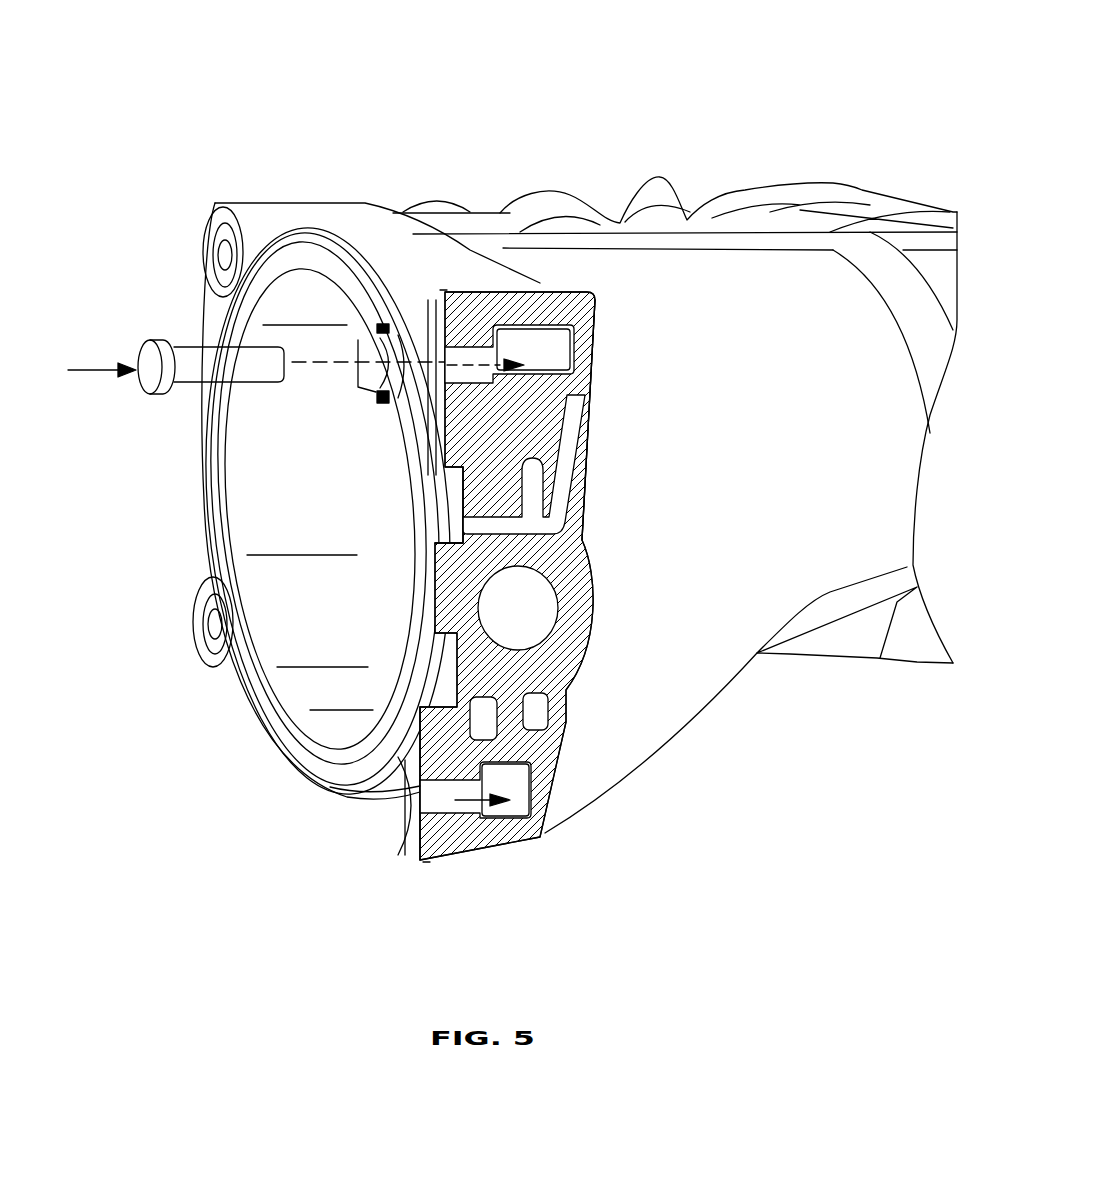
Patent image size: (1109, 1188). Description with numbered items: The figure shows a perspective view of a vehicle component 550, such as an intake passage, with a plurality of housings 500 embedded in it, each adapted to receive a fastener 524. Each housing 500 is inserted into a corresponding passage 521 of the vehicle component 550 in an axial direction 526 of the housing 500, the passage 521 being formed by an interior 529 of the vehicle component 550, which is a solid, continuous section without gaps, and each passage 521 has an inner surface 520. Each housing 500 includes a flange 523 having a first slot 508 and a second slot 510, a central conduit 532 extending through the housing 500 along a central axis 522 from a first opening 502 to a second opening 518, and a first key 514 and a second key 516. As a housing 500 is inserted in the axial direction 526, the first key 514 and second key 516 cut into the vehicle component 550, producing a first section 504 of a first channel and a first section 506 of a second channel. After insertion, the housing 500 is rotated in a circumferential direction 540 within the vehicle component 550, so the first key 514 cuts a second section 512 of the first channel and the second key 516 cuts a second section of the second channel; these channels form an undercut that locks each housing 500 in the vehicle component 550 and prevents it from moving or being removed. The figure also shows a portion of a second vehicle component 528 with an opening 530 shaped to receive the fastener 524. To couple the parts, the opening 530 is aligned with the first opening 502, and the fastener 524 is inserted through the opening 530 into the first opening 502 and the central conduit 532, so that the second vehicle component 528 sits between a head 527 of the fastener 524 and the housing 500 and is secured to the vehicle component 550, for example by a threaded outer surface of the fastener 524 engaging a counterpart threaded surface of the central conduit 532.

The housing 500 is at (213, 212).
The first opening 502 is at (235, 212).
The first section of first channel 504 is at (203, 250).
The first section of second channel 506 is at (243, 240).
The first slot 508 is at (222, 203).
The second slot 510 is at (218, 297).
The second section of first channel 512 is at (515, 284).
The first key 514 is at (490, 293).
The second key 516 is at (560, 428).
The second opening 518 is at (533, 352).
The inner surface 520 is at (596, 300).
The passage 521 is at (408, 385).
The central axis 522 is at (500, 362).
The flange 523 is at (448, 292).
The fastener 524 is at (197, 397).
The axial direction 526 is at (80, 365).
The head 527 is at (135, 385).
The second vehicle component 528 is at (360, 393).
The interior 529 is at (463, 540).
The opening 530 is at (353, 380).
The central conduit 532 is at (463, 407).
The circumferential direction 540 is at (400, 773).
The vehicle component 550 is at (622, 115).